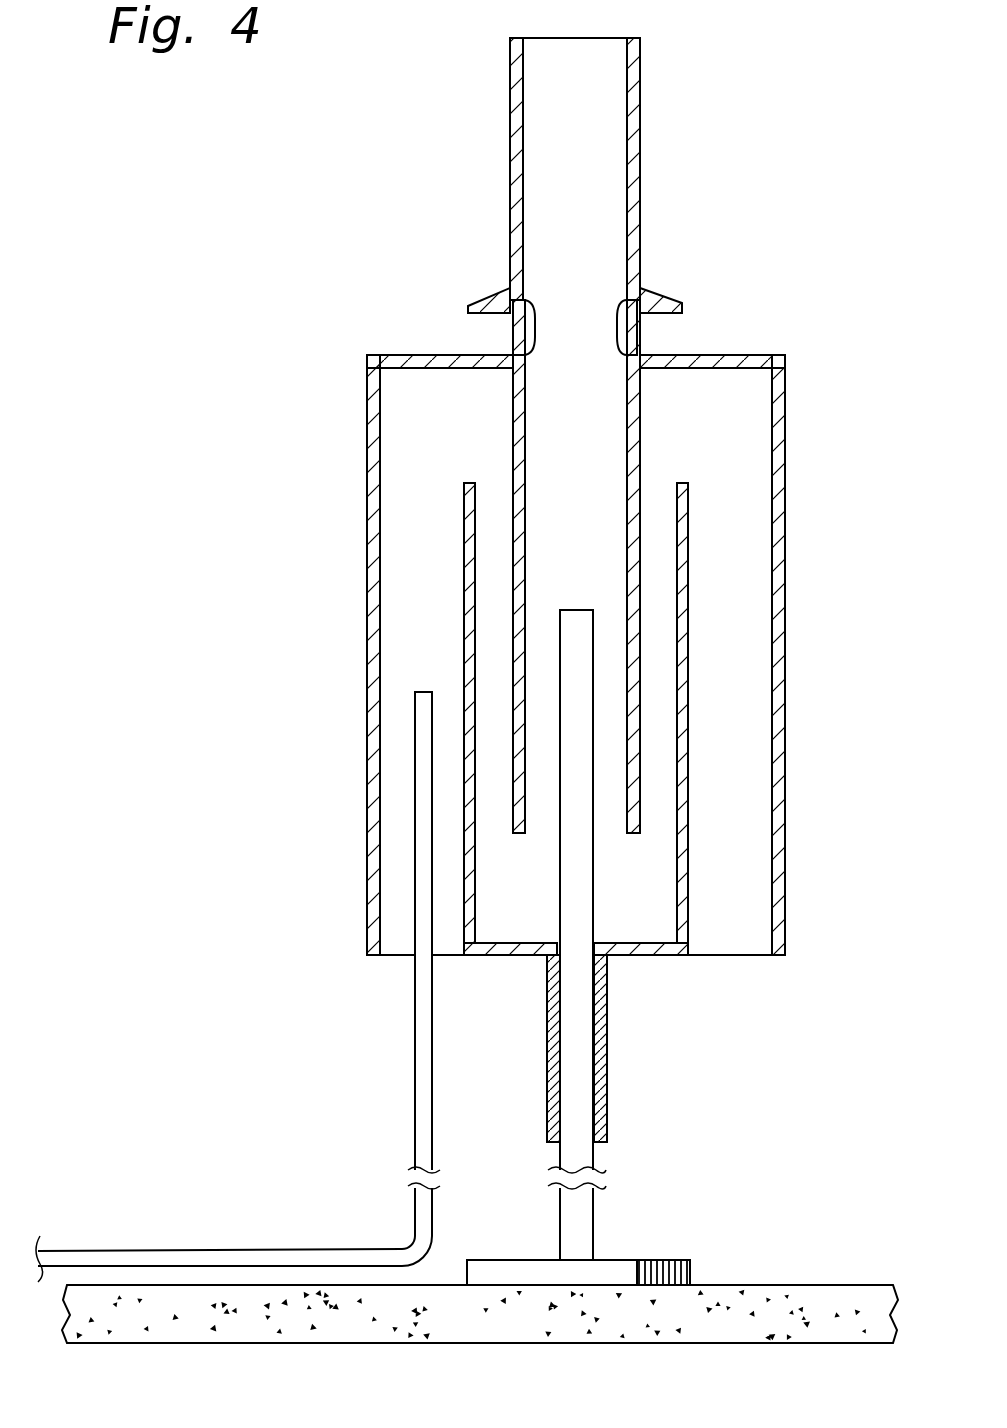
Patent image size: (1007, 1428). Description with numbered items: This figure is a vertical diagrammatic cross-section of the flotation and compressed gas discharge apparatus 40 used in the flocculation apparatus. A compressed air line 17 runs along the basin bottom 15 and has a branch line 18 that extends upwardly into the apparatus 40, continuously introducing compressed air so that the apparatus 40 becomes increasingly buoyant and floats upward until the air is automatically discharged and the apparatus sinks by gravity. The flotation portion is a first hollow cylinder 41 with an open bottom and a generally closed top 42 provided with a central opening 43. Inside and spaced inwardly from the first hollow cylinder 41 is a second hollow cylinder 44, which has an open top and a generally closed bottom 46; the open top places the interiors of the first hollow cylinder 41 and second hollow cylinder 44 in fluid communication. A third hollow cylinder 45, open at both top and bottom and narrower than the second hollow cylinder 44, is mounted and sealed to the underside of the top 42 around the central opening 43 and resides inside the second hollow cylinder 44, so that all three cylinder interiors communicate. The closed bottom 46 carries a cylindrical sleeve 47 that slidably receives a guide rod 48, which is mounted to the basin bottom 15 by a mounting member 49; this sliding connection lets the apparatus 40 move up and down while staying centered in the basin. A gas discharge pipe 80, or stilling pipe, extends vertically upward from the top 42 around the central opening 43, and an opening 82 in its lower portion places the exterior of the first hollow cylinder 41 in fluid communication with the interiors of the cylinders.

The basin bottom 15 is at (803, 1285).
The compressed air line 17 is at (250, 1250).
The branch line 18 is at (415, 1060).
The flotation and compressed gas discharge apparatus 40 is at (756, 294).
The first hollow cylinder 41 is at (367, 640).
The top 42 is at (418, 355).
The central opening 43 is at (575, 360).
The second hollow cylinder 44 is at (688, 680).
The third hollow cylinder 45 is at (640, 452).
The closed bottom 46 is at (633, 942).
The cylindrical sleeve 47 is at (609, 1050).
The guide rod 48 is at (596, 1228).
The mounting member 49 is at (512, 1258).
The gas discharge pipe 80 is at (640, 183).
The opening 82 is at (630, 337).